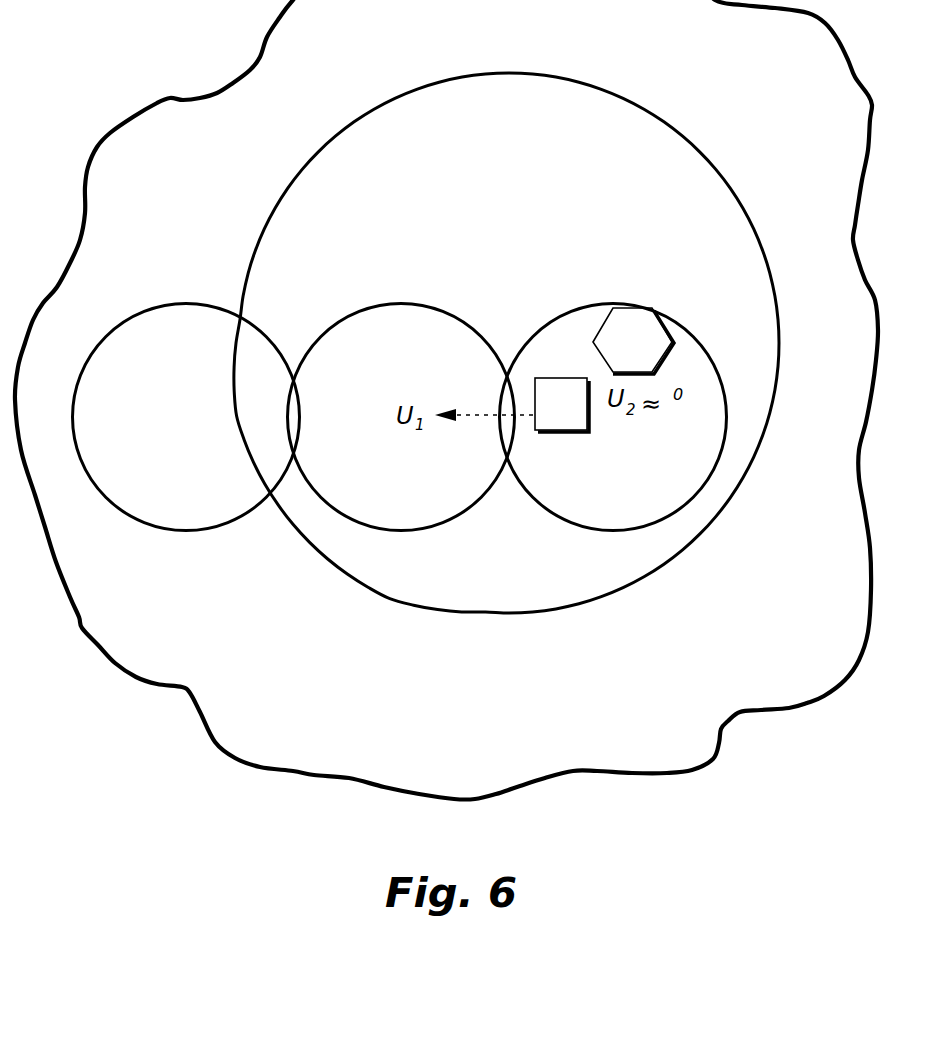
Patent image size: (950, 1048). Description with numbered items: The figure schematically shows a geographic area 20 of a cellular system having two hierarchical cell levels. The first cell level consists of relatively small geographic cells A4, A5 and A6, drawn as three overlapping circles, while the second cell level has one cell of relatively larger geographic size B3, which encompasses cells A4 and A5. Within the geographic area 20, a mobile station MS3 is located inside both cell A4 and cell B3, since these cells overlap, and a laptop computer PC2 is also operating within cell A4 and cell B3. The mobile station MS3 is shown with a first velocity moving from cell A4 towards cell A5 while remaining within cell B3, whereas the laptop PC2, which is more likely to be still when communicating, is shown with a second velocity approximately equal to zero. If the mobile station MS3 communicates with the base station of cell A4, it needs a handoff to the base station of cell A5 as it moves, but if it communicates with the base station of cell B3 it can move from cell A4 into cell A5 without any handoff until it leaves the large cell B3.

The geographic area 20 is at (725, 726).
The cell of relatively larger geographic size B3 is at (660, 117).
The cell A6 is at (244, 519).
The cell A5 is at (369, 527).
The cell A4 is at (648, 527).
The laptop computer PC2 is at (633, 341).
The mobile station MS3 is at (562, 405).